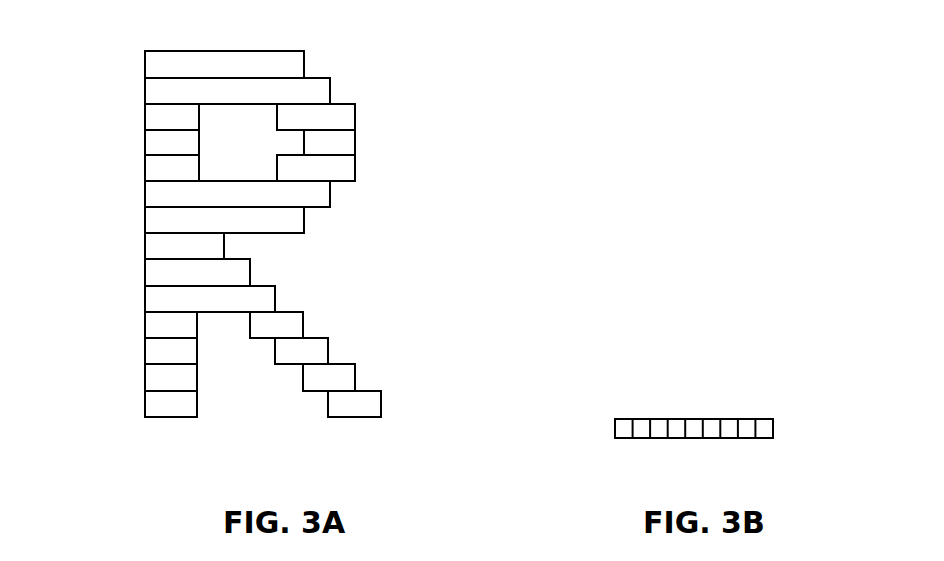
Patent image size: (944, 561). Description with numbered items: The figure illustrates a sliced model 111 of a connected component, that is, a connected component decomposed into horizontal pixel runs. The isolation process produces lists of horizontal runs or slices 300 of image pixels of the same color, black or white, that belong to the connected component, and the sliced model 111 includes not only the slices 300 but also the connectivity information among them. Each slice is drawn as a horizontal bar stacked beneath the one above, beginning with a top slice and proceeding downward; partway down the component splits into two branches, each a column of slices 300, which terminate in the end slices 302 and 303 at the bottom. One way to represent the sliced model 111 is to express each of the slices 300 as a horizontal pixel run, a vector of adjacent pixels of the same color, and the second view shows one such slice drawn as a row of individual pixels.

The slices 300 is at (128, 53).
The sliced model 111 is at (405, 117).
The end slice 302 is at (168, 418).
The end slice 303 is at (352, 418).